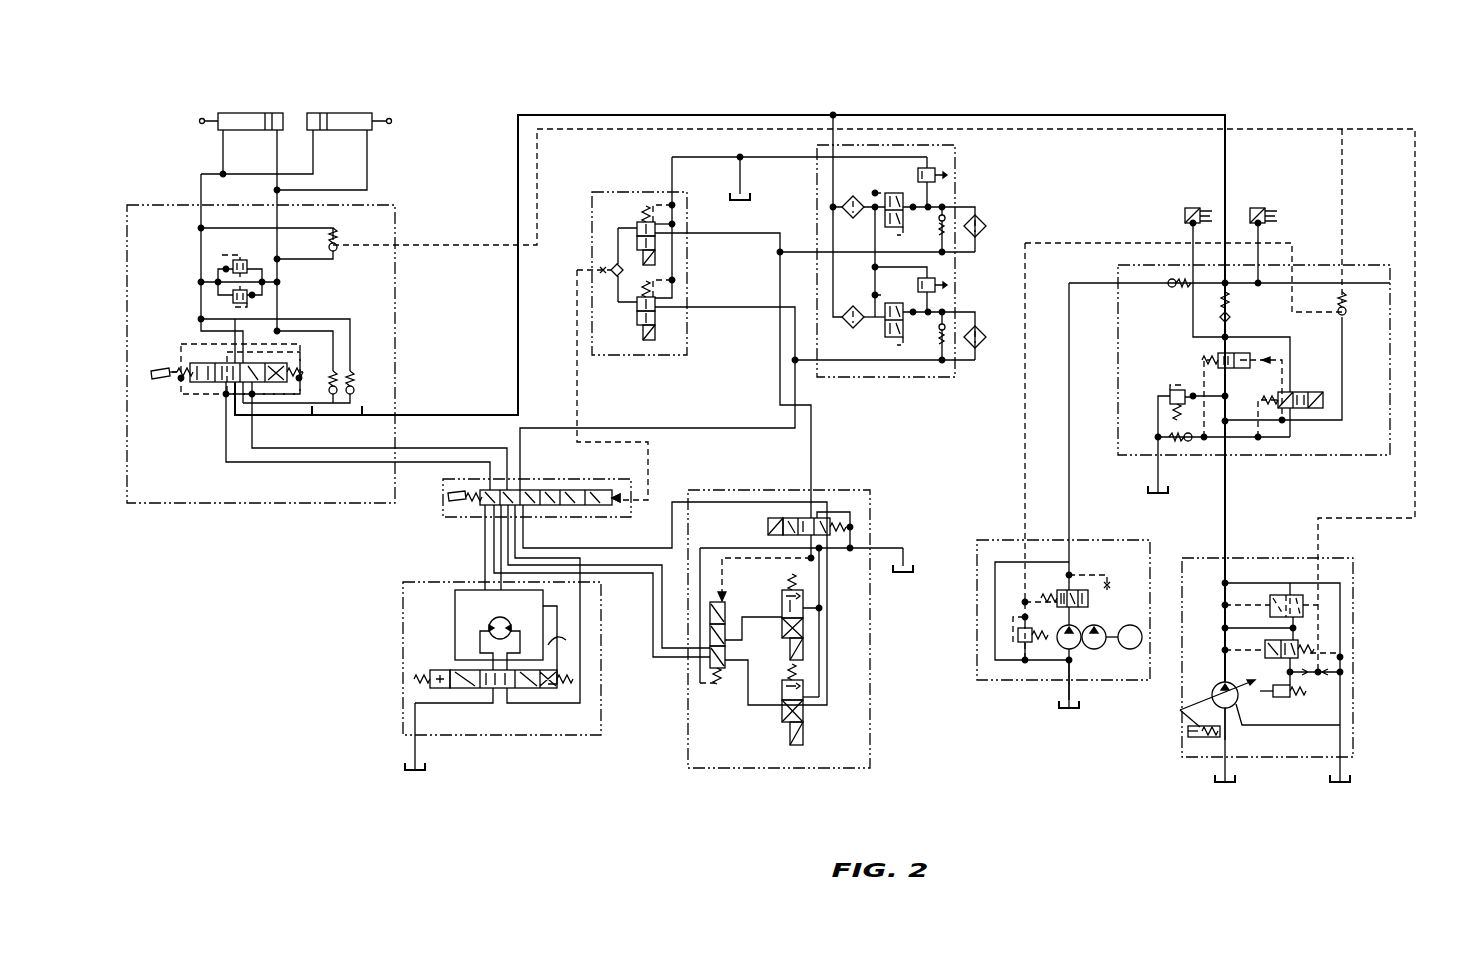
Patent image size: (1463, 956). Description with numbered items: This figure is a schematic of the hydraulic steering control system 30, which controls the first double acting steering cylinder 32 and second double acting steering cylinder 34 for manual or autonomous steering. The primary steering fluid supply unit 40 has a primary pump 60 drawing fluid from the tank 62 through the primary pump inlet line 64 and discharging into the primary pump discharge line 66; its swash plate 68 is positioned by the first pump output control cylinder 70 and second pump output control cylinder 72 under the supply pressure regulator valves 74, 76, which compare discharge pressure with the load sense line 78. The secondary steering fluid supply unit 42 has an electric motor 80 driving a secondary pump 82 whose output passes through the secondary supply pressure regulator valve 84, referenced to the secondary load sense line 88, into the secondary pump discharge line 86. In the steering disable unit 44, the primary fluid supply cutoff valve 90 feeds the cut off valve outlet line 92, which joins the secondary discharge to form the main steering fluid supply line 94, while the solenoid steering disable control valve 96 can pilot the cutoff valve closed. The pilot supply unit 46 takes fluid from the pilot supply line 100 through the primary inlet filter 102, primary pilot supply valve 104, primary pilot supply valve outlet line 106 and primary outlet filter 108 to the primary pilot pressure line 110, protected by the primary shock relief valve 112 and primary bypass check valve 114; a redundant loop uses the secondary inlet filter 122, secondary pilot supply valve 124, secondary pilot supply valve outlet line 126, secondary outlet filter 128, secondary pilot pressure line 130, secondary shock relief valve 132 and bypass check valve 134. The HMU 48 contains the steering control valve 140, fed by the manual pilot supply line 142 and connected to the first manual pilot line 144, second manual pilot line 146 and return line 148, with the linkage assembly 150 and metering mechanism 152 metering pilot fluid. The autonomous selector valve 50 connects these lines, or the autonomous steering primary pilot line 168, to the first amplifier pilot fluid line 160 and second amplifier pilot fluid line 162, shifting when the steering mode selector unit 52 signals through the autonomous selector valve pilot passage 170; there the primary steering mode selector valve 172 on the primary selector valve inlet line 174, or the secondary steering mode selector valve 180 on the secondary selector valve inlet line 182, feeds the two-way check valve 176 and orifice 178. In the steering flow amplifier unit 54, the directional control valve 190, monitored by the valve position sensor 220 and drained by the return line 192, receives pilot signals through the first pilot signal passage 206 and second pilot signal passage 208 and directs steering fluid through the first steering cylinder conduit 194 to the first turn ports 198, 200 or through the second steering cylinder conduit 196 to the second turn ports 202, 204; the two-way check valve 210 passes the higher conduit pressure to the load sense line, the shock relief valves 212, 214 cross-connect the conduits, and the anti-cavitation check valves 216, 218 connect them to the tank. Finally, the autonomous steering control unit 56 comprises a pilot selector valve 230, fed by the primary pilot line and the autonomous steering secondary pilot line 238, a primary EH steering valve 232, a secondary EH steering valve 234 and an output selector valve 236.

The hydraulic steering control system 30 is at (1007, 65).
The first double acting steering cylinder 32 is at (230, 112).
The second double acting steering cylinder 34 is at (337, 112).
The primary steering fluid supply unit 40 is at (1355, 725).
The secondary steering fluid supply unit 42 is at (1005, 680).
The steering disable unit 44 is at (1350, 265).
The pilot supply unit 46 is at (958, 152).
The manual steering control or metering unit 48 is at (512, 737).
The autonomous selector valve 50 is at (562, 490).
The steering mode selector unit 52 is at (596, 192).
The steering flow amplifier unit 54 is at (128, 448).
The autonomous steering control unit 56 is at (780, 770).
The primary pump 60 is at (1214, 694).
The tank 62 is at (340, 417).
The primary pump inlet line 64 is at (1229, 770).
The primary pump discharge line 66 is at (1224, 660).
The stroke-adjusting mechanism 68 is at (1202, 718).
The first pump output control cylinder 70 is at (1207, 738).
The second pump output control cylinder 72 is at (1301, 691).
The supply pressure regulator valve 74 is at (1304, 599).
The supply pressure regulator valve 76 is at (1300, 647).
The load sense line 78 is at (443, 246).
The electric motor 80 is at (1131, 625).
The secondary pump 82 is at (1072, 652).
The secondary supply pressure regulator valve 84 is at (1090, 606).
The secondary pump discharge line 86 is at (1070, 518).
The secondary load sense line 88 is at (1025, 500).
The primary fluid supply cutoff valve 90 is at (1232, 368).
The cut off valve outlet line 92 is at (1218, 349).
The main steering fluid supply line 94 is at (437, 414).
The steering disable control valve 96 is at (1298, 392).
The pilot supply line 100 is at (828, 133).
The primary inlet filter 102 is at (858, 326).
The primary pilot supply valve 104 is at (887, 328).
The primary pilot supply valve outlet line 106 is at (972, 312).
The primary outlet filter 108 is at (986, 344).
The primary pilot pressure line 110 is at (893, 378).
The primary shock relief valve 112 is at (937, 282).
The primary bypass check valve 114 is at (946, 334).
The secondary inlet filter 122 is at (847, 198).
The secondary pilot supply valve 124 is at (903, 193).
The secondary pilot supply valve outlet line 126 is at (976, 207).
The secondary outlet filter 128 is at (987, 226).
The secondary pilot pressure line 130 is at (853, 254).
The secondary shock relief valve 132 is at (931, 166).
The bypass check valve 134 is at (947, 213).
The steering control valve 140 is at (477, 692).
The manual pilot supply line 142 is at (573, 702).
The first manual pilot line 144 is at (455, 626).
The second manual pilot line 146 is at (545, 598).
The return line 148 is at (414, 752).
The linkage assembly 150 is at (558, 662).
The metering mechanism 152 is at (491, 622).
The first amplifier pilot fluid line 160 is at (350, 463).
The second amplifier pilot fluid line 162 is at (418, 449).
The autonomous steering primary pilot line 168 is at (672, 530).
The autonomous selector valve pilot passage 170 is at (578, 390).
The primary steering mode selector valve 172 is at (637, 316).
The primary selector valve inlet line 174 is at (725, 309).
The two-way check valve 176 is at (612, 265).
The orifice 178 is at (601, 278).
The secondary steering mode selector valve 180 is at (638, 221).
The secondary selector valve inlet line 182 is at (725, 235).
The directional control valve 190 is at (215, 388).
The return line 192 is at (276, 410).
The first steering cylinder conduit 194 is at (201, 254).
The second steering cylinder conduit 196 is at (279, 306).
The first turn port 198 is at (222, 131).
The first turn port 200 is at (312, 132).
The second turn port 202 is at (277, 132).
The second turn port 204 is at (370, 132).
The first pilot signal passage 206 is at (181, 358).
The second pilot signal passage 208 is at (290, 358).
The two-way check valve 210 is at (338, 242).
The shock relief valve 212 is at (249, 265).
The shock relief valve 214 is at (233, 296).
The anti-cavitation check valve 216 is at (338, 381).
The anti-cavitation check valve 218 is at (351, 374).
The valve position sensor 220 is at (152, 379).
The pilot selector valve 230 is at (769, 521).
The primary electro-hydraulic steering valve 232 is at (805, 705).
The secondary electro-hydraulic steering valve 234 is at (782, 601).
The output selector valve 236 is at (726, 681).
The autonomous steering secondary pilot line 238 is at (812, 448).